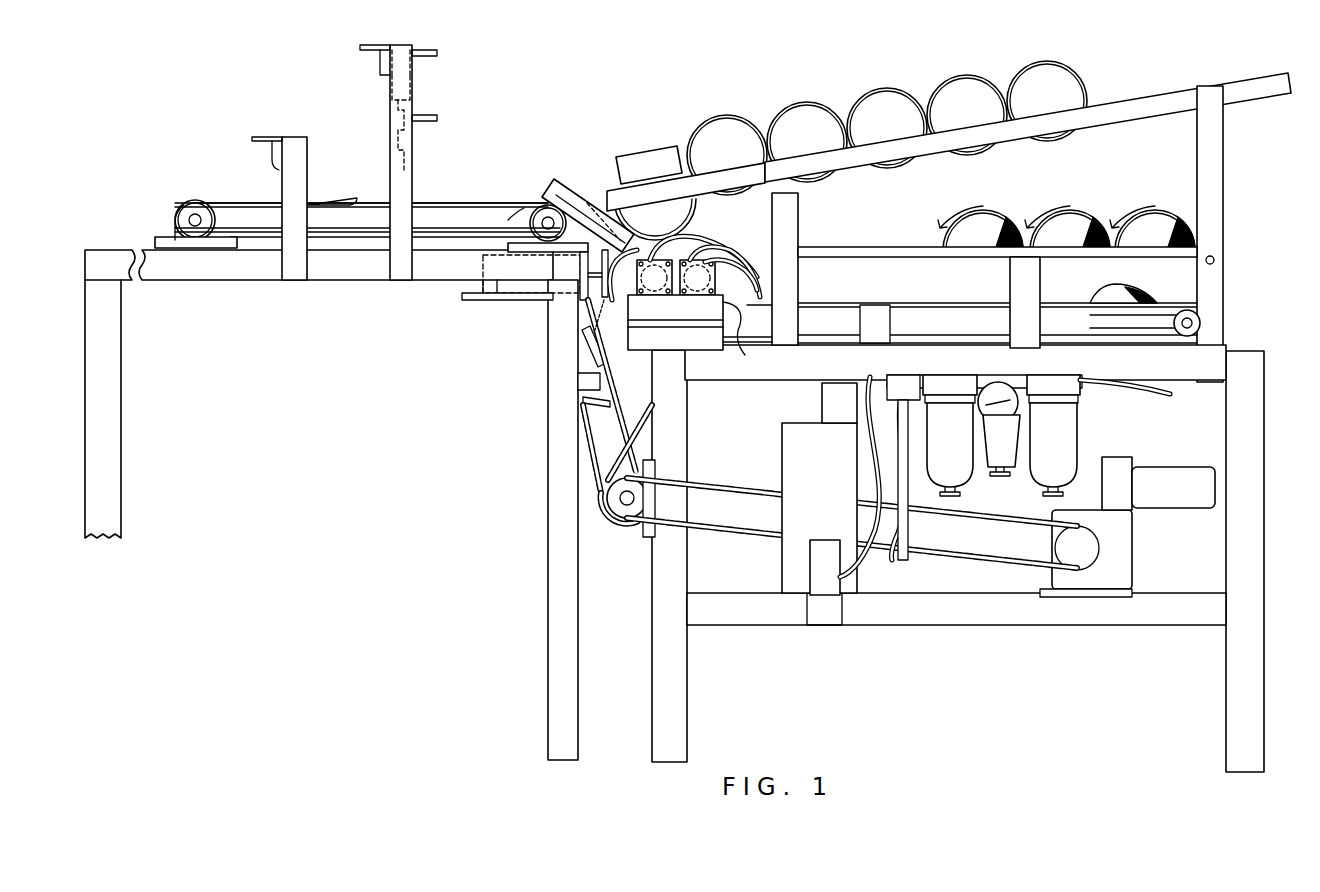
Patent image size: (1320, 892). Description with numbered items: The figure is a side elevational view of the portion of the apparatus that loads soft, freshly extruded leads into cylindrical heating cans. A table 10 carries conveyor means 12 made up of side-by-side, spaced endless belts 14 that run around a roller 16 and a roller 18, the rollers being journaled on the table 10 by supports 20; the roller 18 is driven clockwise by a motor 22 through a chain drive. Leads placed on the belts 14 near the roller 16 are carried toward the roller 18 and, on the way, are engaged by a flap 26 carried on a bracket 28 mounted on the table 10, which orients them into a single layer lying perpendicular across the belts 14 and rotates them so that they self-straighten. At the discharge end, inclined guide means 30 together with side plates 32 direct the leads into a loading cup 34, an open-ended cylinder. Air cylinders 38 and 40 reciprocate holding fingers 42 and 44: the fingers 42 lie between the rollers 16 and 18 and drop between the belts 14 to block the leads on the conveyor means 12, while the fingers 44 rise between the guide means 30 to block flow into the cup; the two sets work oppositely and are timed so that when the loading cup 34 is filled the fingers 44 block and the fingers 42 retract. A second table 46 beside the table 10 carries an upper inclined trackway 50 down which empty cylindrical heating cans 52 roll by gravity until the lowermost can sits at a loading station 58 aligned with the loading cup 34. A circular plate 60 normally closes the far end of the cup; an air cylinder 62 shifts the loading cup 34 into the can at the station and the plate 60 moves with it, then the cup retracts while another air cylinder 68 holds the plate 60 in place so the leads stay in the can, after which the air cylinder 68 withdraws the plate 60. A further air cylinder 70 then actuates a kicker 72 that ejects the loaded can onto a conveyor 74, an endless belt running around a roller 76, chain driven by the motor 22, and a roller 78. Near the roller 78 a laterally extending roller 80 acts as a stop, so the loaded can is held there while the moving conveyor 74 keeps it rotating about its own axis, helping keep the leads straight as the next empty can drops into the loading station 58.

The table 10 is at (347, 267).
The conveyor means 12 is at (479, 201).
The endless belts 14 is at (468, 182).
The roller 16 is at (207, 182).
The roller 18 is at (515, 208).
The supports 20 is at (178, 218).
The motor 22 is at (1110, 570).
The flap 26 is at (313, 200).
The bracket 28 is at (300, 137).
The inclined guide means 30 is at (588, 212).
The side plates 32 is at (556, 192).
The loading cup 34 is at (622, 303).
The air cylinder 38 is at (412, 90).
The air cylinder 40 is at (588, 380).
The holding fingers 42 is at (407, 175).
The holding fingers 44 is at (580, 303).
The second table 46 is at (1252, 351).
The inclined trackway 50 is at (1115, 110).
The cylindrical heating cans 52 is at (853, 112).
The loading station 58 is at (617, 257).
The circular plate 60 is at (668, 260).
The air cylinder 62 is at (708, 270).
The air cylinder 68 is at (662, 305).
The air cylinder 70 is at (497, 295).
The kicker 72 is at (580, 322).
The conveyor 74 is at (1105, 302).
The roller 76 is at (745, 355).
The roller 78 is at (1174, 323).
The roller 80 is at (1215, 250).